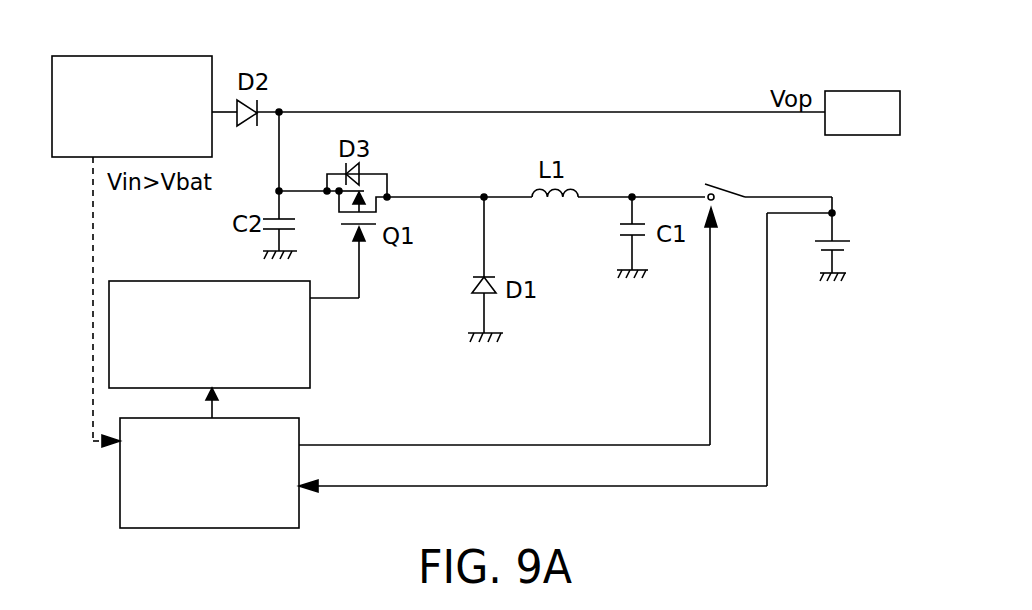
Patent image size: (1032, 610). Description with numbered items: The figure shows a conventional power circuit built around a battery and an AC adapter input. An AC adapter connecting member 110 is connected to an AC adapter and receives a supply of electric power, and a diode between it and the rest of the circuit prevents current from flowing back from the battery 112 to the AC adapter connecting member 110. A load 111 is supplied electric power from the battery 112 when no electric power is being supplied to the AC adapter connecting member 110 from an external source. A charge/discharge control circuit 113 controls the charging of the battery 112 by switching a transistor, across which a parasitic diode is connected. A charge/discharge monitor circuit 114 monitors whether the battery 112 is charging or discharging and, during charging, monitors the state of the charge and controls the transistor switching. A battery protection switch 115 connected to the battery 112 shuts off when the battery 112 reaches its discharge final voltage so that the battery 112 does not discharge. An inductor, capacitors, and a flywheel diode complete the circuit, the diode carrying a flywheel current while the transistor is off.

The AC adapter connecting member 110 is at (146, 56).
The load 111 is at (853, 91).
The battery 112 is at (832, 235).
The charge/discharge control circuit 113 is at (126, 281).
The charge/discharge monitor circuit 114 is at (137, 528).
The battery protection switch 115 is at (726, 191).